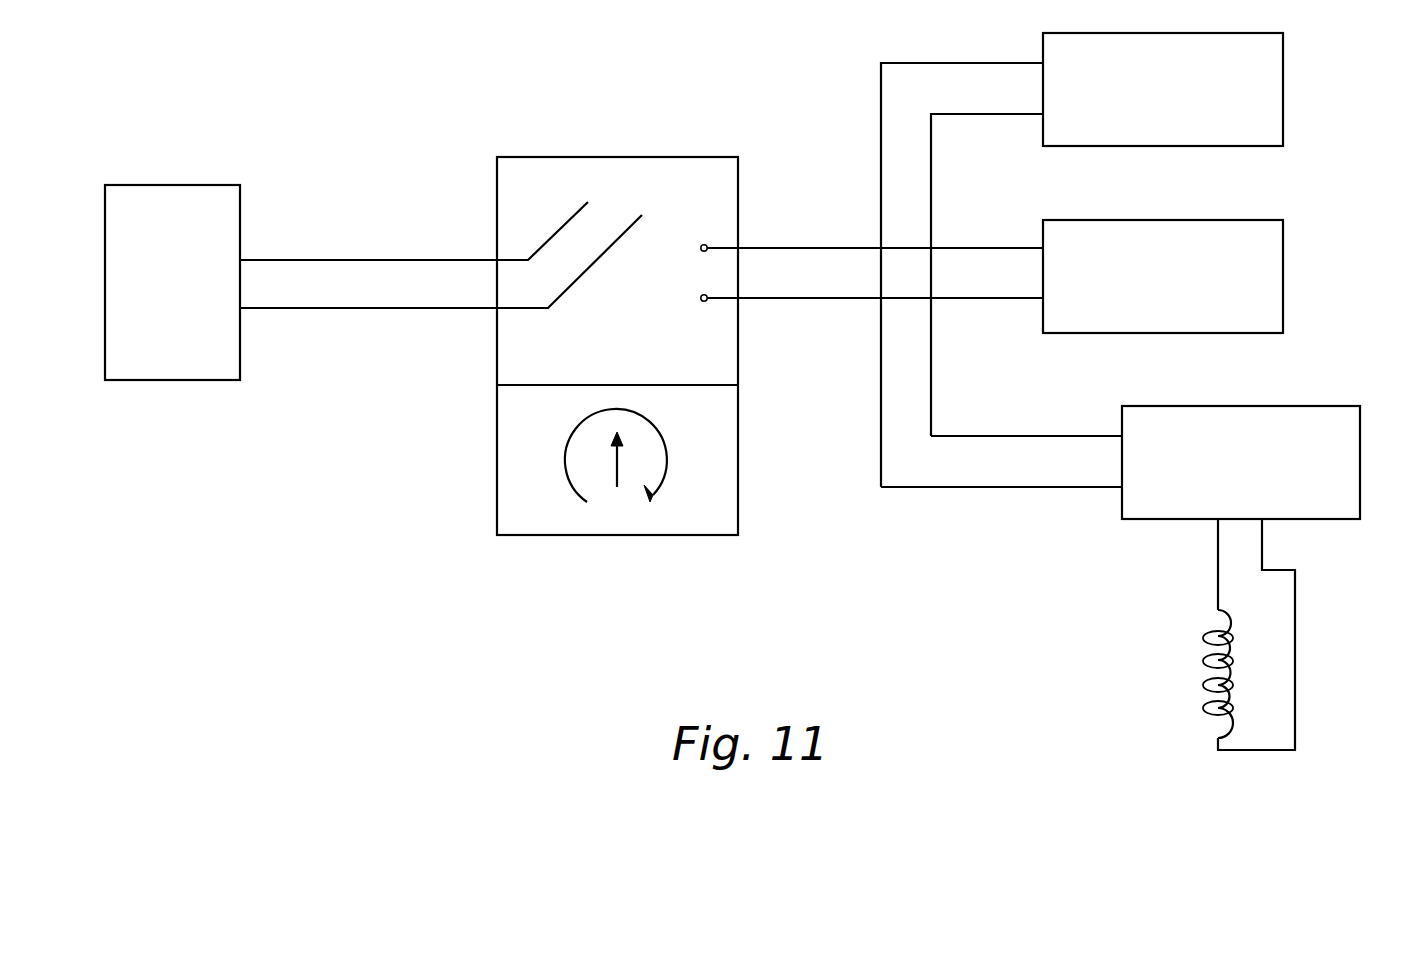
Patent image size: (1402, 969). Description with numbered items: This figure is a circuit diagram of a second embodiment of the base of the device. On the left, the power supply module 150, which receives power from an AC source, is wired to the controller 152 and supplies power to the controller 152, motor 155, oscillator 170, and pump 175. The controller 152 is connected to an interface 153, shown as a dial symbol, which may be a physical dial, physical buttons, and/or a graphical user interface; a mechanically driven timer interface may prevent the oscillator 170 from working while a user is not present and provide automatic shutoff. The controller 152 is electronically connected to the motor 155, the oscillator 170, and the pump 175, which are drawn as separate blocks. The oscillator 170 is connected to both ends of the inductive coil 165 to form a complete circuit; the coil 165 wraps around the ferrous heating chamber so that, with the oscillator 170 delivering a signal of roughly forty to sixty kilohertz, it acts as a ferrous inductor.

The power supply module 150 is at (150, 298).
The controller 152 is at (639, 352).
The interface 153 is at (722, 517).
The motor 155 is at (1185, 107).
The pump 175 is at (1140, 295).
The oscillator 170 is at (1265, 479).
The inductive coil 165 is at (1200, 687).